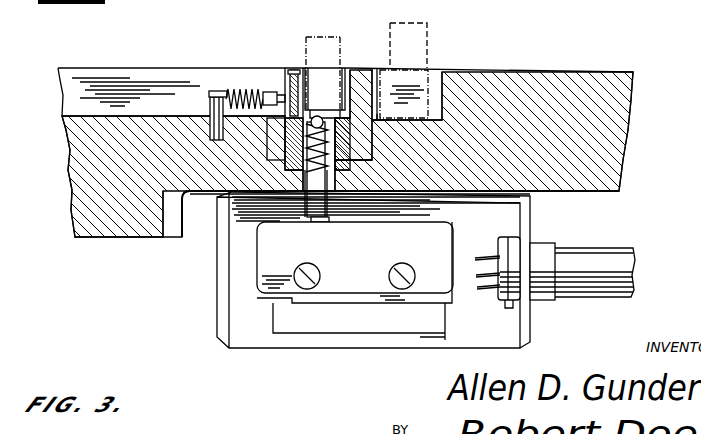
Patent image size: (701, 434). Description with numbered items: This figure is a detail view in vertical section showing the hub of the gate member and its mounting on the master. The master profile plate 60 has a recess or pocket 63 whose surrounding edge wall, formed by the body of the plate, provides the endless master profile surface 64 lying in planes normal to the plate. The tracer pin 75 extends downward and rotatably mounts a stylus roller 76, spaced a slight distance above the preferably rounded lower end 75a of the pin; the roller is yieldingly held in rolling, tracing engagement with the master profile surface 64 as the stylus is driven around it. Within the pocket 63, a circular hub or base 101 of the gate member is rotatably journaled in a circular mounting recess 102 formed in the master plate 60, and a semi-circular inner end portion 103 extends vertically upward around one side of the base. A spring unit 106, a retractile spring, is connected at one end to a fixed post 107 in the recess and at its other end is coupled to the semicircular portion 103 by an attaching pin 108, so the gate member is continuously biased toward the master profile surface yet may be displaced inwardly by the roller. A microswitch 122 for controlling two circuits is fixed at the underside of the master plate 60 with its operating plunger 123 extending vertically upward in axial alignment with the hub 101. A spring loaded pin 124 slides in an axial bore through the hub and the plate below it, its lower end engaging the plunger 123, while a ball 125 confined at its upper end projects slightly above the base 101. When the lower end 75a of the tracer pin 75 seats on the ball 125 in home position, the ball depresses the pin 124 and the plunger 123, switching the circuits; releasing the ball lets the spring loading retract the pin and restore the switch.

The master profile plate 60 is at (571, 82).
The recess or pocket 63 is at (110, 77).
The master profile surface 64 is at (195, 78).
The tracer pin 75 is at (303, 37).
The lower end of tracer pin 75a is at (419, 134).
The stylus roller 76 is at (452, 66).
The hub or base 101 is at (357, 143).
The mounting recess 102 is at (268, 140).
The semi-circular inner end portion 103 is at (325, 82).
The spring unit 106 is at (249, 85).
The fixed post 107 is at (209, 108).
The attaching pin 108 is at (275, 92).
The microswitch 122 is at (272, 289).
The operating plunger 123 is at (315, 222).
The spring loaded pin 124 is at (305, 198).
The ball 125 is at (316, 122).